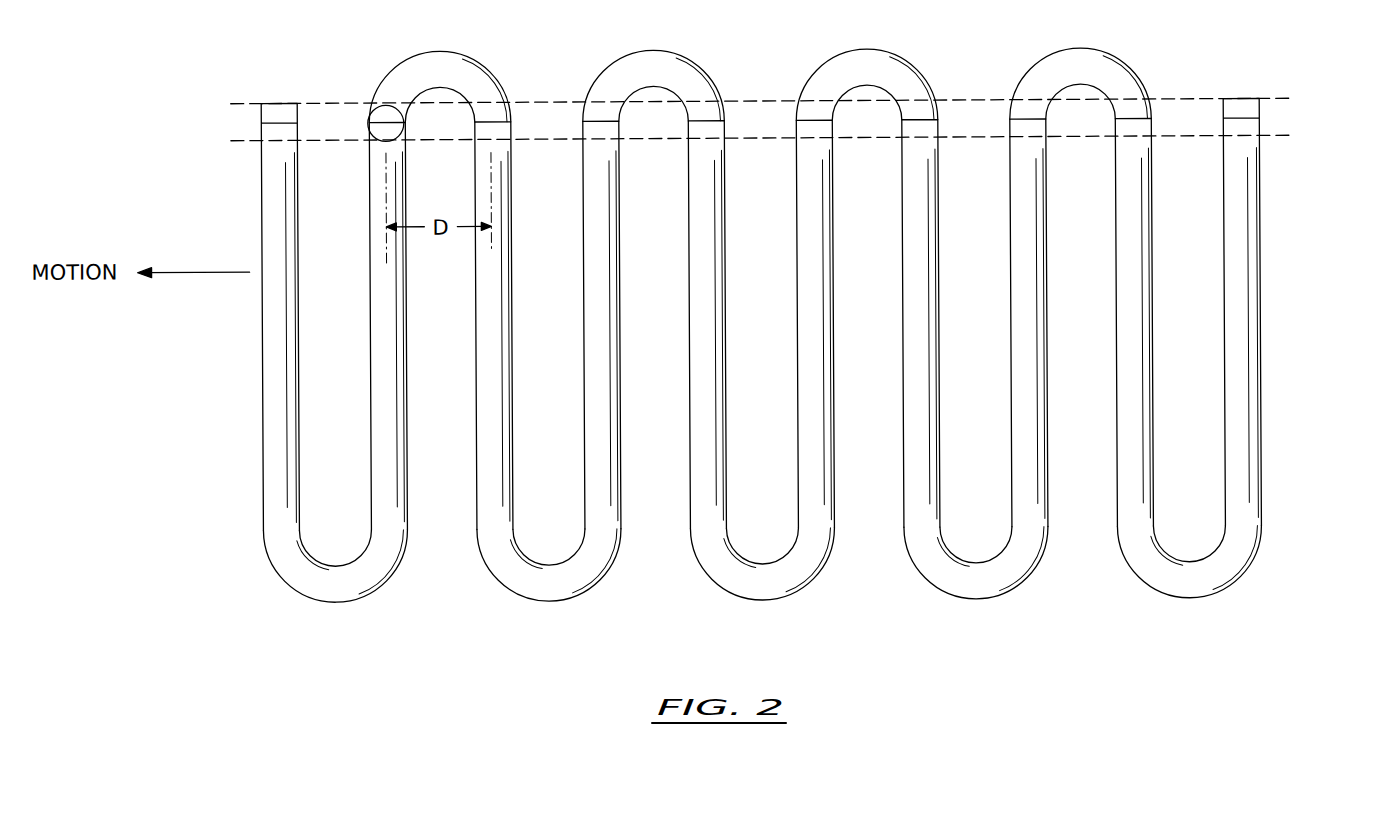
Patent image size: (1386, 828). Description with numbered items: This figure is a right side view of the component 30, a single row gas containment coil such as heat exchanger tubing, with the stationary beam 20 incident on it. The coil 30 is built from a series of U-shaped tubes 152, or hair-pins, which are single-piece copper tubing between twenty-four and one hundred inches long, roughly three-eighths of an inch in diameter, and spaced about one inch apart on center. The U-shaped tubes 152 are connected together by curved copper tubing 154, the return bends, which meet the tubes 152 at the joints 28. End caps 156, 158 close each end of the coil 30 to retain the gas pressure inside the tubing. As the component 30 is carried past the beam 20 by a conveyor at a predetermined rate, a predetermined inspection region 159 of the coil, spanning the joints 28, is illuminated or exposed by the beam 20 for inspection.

The beam 20 is at (385, 104).
The joints 28 is at (362, 121).
The component 30 is at (256, 221).
The U-shaped tubes 152 is at (262, 377).
The curved copper tubing 154 is at (441, 54).
The end cap 156 is at (278, 105).
The end cap 158 is at (1238, 105).
The inspection region 159 is at (228, 101).